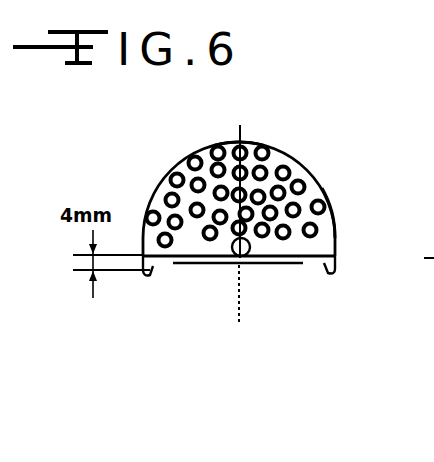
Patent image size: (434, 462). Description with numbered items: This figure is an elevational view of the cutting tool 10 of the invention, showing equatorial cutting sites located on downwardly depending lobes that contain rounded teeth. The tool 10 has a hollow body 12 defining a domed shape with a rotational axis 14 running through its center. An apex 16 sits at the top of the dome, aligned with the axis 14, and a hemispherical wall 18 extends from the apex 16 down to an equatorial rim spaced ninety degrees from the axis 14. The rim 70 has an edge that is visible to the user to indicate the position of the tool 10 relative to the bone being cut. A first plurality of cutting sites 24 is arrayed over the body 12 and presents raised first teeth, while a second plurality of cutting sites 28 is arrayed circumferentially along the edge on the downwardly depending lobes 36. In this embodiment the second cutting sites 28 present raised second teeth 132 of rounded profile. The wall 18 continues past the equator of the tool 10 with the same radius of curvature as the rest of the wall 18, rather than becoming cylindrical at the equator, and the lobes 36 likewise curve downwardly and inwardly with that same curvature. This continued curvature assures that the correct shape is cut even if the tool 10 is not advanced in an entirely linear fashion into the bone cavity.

The tool 10 is at (157, 163).
The hollow body 12 is at (313, 190).
The rotational axis 14 is at (236, 139).
The apex 16 is at (232, 138).
The hemispherical wall 18 is at (331, 216).
The first plurality of cutting sites 24 is at (286, 176).
The second plurality of cutting sites 28 is at (250, 262).
The downwardly depending lobes 36 is at (152, 264).
The rim 70 is at (306, 261).
The rounded second teeth 132 is at (228, 262).